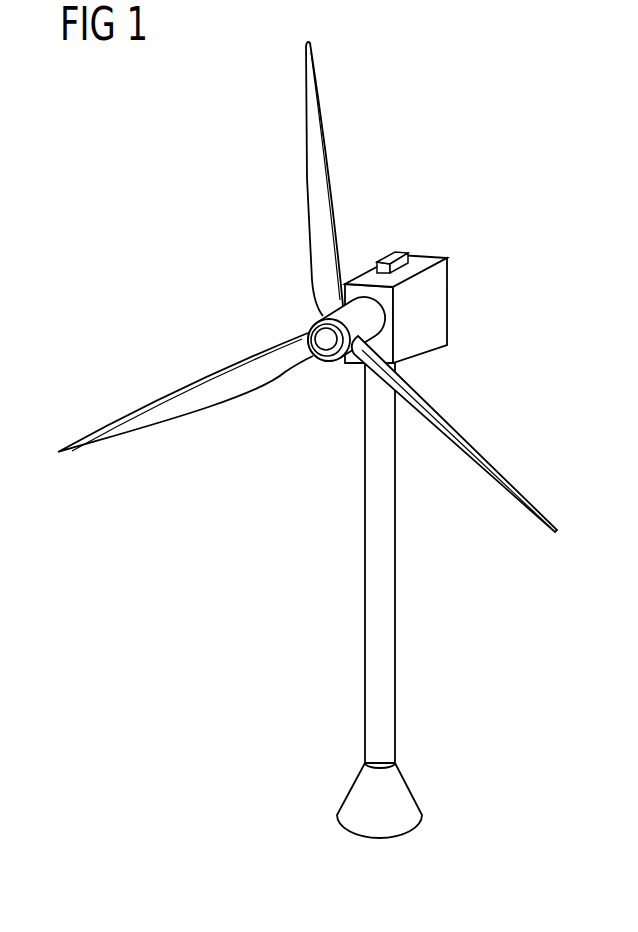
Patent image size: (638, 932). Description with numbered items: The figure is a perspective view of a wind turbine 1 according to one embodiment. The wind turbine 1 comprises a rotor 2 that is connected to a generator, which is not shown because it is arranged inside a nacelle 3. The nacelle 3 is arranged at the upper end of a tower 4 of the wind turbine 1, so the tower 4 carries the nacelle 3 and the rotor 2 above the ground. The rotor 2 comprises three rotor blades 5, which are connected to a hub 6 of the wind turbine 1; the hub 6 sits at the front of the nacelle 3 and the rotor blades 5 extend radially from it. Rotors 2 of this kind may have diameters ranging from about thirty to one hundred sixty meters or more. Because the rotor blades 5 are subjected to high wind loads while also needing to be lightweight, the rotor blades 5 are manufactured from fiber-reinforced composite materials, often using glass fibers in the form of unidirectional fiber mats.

The wind turbine 1 is at (170, 200).
The rotor 2 is at (160, 378).
The nacelle 3 is at (437, 300).
The tower 4 is at (382, 672).
The rotor blades 5 is at (315, 198).
The hub 6 is at (367, 320).